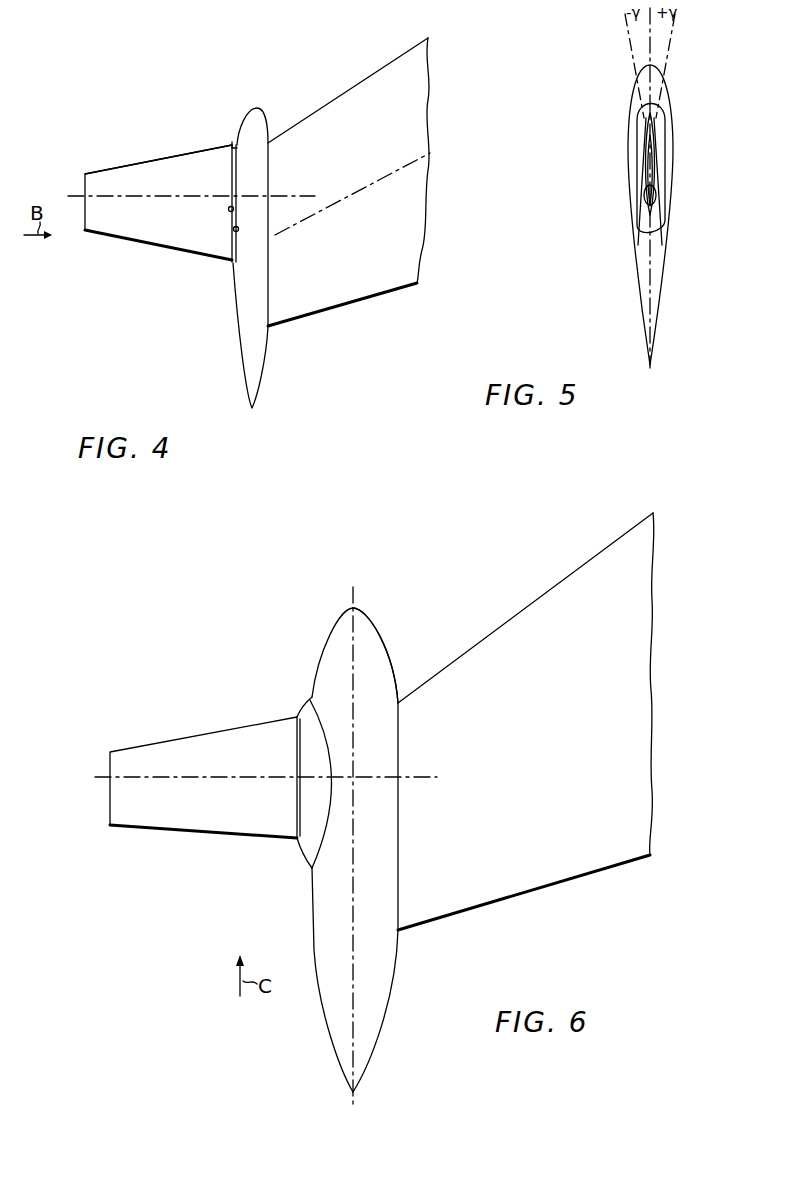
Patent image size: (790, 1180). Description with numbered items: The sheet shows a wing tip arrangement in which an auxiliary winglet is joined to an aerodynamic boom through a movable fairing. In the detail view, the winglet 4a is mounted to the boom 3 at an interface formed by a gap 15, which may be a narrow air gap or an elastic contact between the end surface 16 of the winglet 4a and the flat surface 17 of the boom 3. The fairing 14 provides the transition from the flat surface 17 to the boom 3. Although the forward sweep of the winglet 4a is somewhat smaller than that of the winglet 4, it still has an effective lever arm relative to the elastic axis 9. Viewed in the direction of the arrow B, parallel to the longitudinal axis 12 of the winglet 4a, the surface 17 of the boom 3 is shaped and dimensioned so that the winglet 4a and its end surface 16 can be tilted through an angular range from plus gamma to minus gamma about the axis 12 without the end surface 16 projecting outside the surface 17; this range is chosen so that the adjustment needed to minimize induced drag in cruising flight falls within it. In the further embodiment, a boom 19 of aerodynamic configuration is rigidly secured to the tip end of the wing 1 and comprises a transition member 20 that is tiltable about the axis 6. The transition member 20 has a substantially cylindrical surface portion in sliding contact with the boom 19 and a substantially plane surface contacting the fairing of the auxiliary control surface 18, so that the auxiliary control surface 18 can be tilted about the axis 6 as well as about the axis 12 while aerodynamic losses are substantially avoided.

In FIG. 6, the wing 1 is at (566, 691).
In FIG. 4, the boom 3 is at (262, 122).
In FIG. 5, the boom 3 is at (641, 250).
In FIG. 4, the winglet 4 is at (134, 253).
In FIG. 4, the winglet 4a is at (137, 170).
In FIG. 5, the winglet 4a is at (648, 196).
In FIG. 6, the axis 6 is at (353, 604).
In FIG. 4, the elastic axis 9 is at (425, 156).
In FIG. 4, the longitudinal axis 12 is at (298, 196).
In FIG. 6, the longitudinal axis 12 is at (421, 777).
In FIG. 4, the fairing 14 is at (236, 143).
In FIG. 4, the gap 15 is at (232, 145).
In FIG. 4, the end surface 16 is at (234, 209).
In FIG. 5, the end surface 16 is at (648, 143).
In FIG. 4, the flat surface 17 is at (233, 229).
In FIG. 5, the flat surface 17 is at (640, 126).
In FIG. 6, the auxiliary control surface 18 is at (175, 744).
In FIG. 6, the boom 19 is at (377, 630).
In FIG. 6, the transition member 20 is at (308, 845).